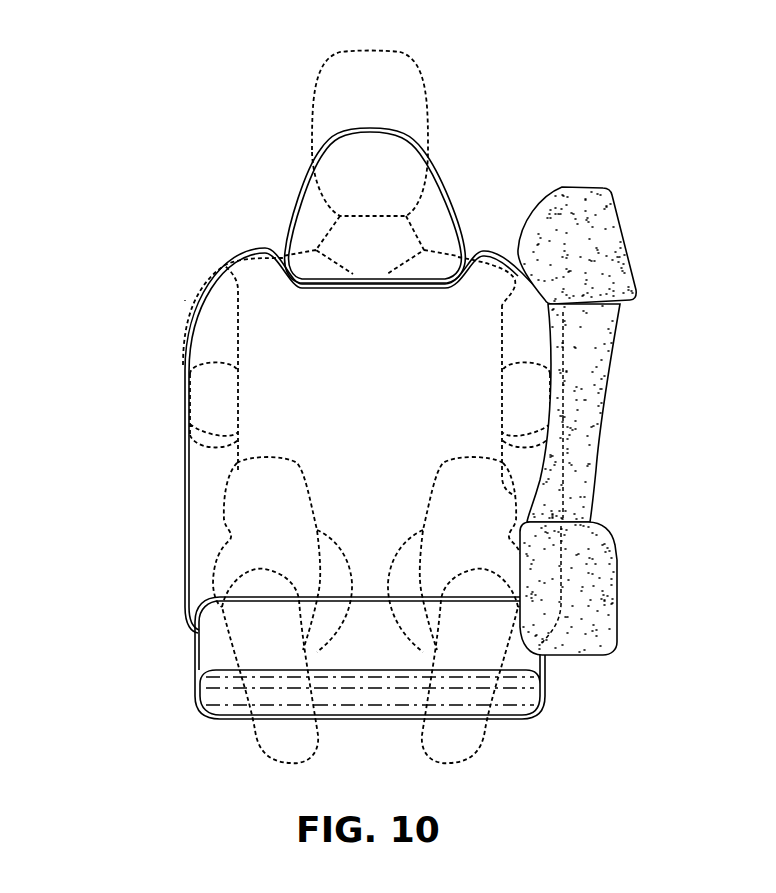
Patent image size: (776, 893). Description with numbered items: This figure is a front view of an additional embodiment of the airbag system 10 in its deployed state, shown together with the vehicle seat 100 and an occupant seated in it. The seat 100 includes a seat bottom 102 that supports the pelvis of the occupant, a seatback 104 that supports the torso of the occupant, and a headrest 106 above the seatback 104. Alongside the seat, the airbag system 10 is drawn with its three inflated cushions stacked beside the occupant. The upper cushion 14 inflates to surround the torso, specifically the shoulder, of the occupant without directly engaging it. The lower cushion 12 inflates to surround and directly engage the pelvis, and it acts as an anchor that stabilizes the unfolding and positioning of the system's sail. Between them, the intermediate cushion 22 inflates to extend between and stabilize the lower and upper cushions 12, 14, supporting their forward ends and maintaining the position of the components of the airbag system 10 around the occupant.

The airbag system 10 is at (630, 397).
The lower cushion 12 is at (602, 627).
The upper cushion 14 is at (577, 203).
The intermediate cushion 22 is at (587, 432).
The seat 100 is at (188, 269).
The seat bottom 102 is at (206, 657).
The seatback 104 is at (205, 513).
The headrest 106 is at (307, 210).